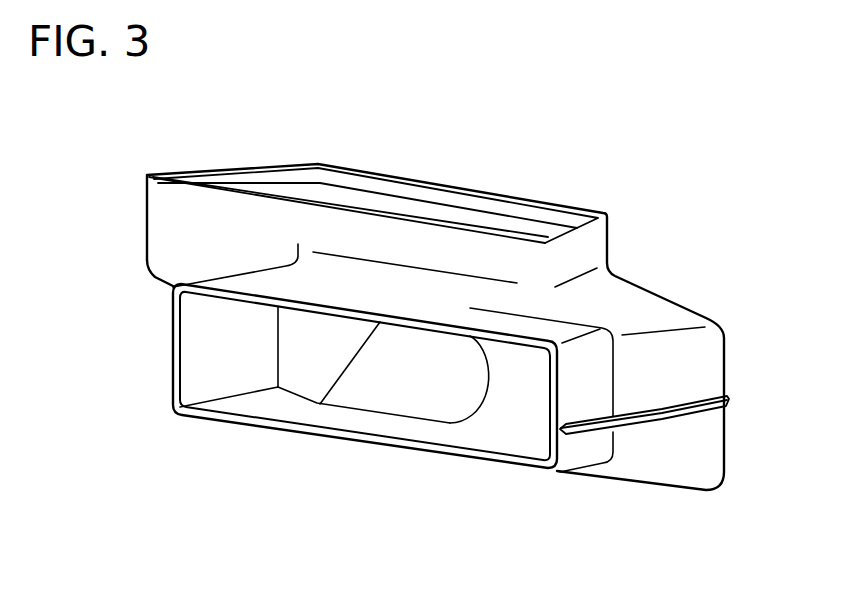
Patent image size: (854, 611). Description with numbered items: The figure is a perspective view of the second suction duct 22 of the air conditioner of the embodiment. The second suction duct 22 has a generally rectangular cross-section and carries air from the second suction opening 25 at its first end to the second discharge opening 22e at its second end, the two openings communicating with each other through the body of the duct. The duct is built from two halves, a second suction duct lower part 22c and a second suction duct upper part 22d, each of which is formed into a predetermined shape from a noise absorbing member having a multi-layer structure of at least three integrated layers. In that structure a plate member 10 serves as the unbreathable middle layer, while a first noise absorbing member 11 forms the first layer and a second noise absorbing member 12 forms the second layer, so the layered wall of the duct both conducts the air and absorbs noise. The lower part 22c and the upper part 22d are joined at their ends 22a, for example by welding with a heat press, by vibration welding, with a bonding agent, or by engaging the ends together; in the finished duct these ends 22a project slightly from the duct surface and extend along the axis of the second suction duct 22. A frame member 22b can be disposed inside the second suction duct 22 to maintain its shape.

The plate member 10 is at (433, 453).
The first noise absorbing member 11 is at (427, 452).
The second noise absorbing member 12 is at (438, 455).
The second suction duct 22 is at (643, 488).
The ends 22a is at (700, 411).
The frame member 22b is at (397, 203).
The second suction duct lower part 22c is at (703, 448).
The second suction duct upper part 22d is at (683, 353).
The second discharge opening 22e is at (263, 412).
The second suction opening 25 is at (497, 203).